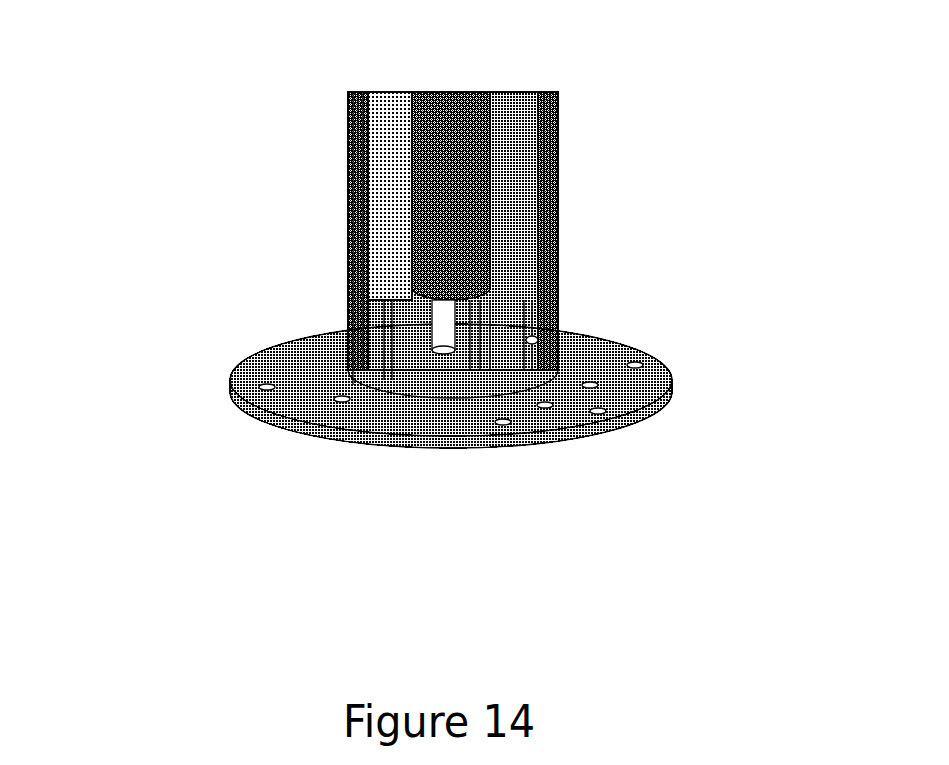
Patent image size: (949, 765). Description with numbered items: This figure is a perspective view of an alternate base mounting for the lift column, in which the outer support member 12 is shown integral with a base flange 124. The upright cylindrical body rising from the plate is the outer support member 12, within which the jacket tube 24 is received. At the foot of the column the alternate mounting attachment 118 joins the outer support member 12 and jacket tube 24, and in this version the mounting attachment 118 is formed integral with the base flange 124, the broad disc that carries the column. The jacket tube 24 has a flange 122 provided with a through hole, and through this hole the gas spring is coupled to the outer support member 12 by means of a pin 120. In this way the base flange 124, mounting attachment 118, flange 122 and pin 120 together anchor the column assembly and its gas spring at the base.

The outer support member 12 is at (348, 191).
The jacket tube 24 is at (487, 212).
The mounting attachment 118 is at (388, 327).
The pin 120 is at (535, 340).
The flange 122 is at (451, 352).
The base flange 124 is at (650, 400).